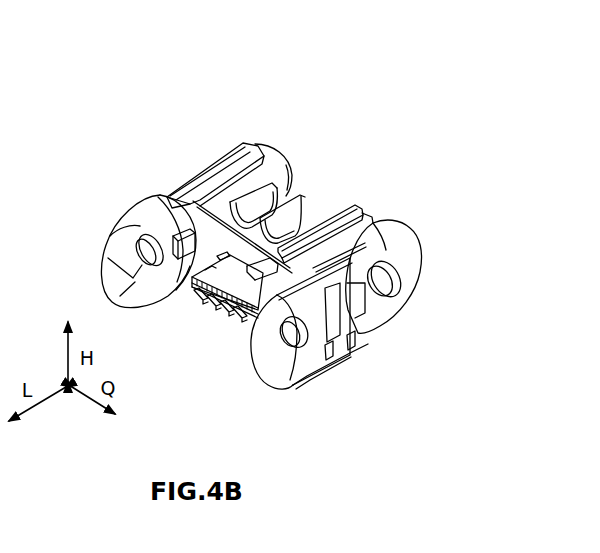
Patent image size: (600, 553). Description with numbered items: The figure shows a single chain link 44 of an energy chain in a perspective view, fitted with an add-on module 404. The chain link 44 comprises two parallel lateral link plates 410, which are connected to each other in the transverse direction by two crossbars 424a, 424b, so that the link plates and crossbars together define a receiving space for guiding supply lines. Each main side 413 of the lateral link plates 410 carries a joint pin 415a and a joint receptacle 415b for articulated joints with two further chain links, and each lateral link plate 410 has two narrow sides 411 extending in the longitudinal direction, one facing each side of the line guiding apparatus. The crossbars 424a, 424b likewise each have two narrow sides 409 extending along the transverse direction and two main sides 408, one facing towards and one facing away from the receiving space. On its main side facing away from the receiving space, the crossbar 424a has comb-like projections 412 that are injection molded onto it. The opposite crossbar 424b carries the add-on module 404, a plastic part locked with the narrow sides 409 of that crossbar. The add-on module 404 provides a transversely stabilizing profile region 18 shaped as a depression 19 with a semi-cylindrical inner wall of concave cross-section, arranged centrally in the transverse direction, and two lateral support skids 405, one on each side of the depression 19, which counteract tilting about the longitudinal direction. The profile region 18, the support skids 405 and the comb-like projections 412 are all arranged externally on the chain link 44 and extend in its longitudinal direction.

The chain link 44 is at (101, 121).
The support skid 405 is at (206, 165).
The depression 19 is at (282, 190).
The add-on module 404 is at (322, 162).
The profile region 18 is at (310, 190).
The crossbar 424b is at (330, 207).
The narrow side 411 is at (377, 225).
The joint pin 415a is at (390, 277).
The lateral link plate 410 is at (136, 250).
The main side 413 is at (116, 250).
The main side 408 is at (257, 295).
The crossbar 424a is at (205, 353).
The narrow side 409 is at (250, 317).
The comb-like projections 412 is at (194, 313).
The joint receptacle 415b is at (148, 244).